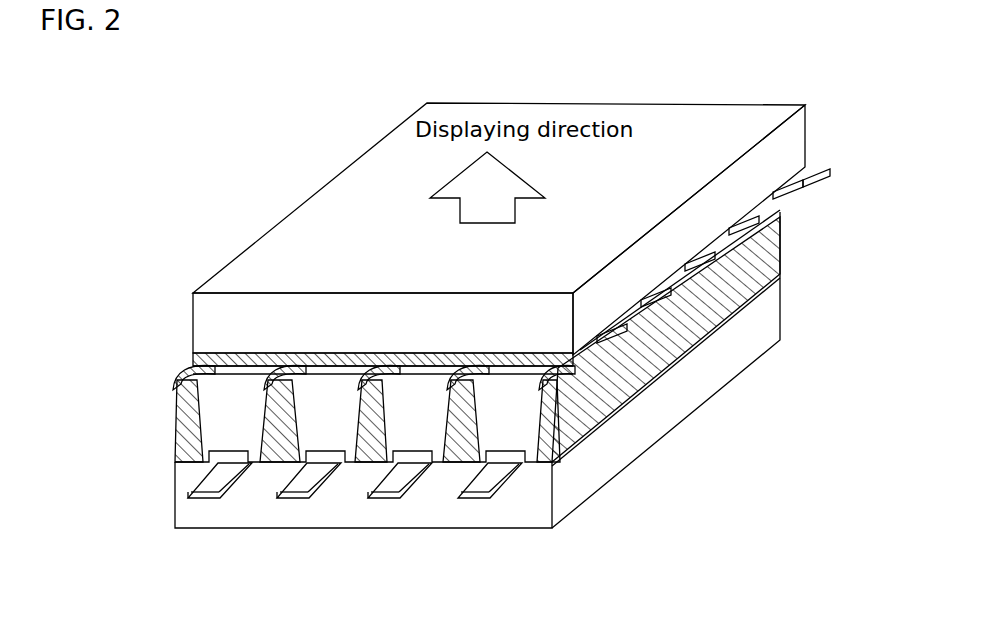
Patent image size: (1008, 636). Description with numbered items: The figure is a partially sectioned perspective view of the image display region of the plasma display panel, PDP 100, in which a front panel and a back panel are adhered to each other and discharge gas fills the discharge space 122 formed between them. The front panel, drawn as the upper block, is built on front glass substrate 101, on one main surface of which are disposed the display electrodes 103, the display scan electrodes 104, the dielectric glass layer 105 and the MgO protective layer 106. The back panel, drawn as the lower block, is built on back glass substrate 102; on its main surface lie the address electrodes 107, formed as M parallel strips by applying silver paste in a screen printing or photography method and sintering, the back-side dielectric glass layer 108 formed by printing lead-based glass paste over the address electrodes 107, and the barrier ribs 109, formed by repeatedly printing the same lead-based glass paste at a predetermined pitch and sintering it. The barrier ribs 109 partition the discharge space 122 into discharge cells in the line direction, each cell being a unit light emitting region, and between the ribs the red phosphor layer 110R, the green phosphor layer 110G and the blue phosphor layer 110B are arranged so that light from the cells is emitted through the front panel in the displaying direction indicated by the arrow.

The PDP 100 is at (782, 316).
The front glass substrate 101 is at (203, 308).
The back glass substrate 102 is at (437, 518).
The display electrodes 103 is at (625, 310).
The display scan electrodes 104 is at (770, 196).
The dielectric glass layer 105 is at (193, 357).
The MgO protective layer 106 is at (195, 370).
The address electrodes 107 is at (215, 483).
The back-side dielectric glass layer 108 is at (196, 462).
The barrier ribs 109 is at (362, 402).
The red phosphor layer 110R is at (185, 497).
The green phosphor layer 110G is at (277, 497).
The blue phosphor layer 110B is at (393, 478).
The discharge space 122 is at (513, 400).